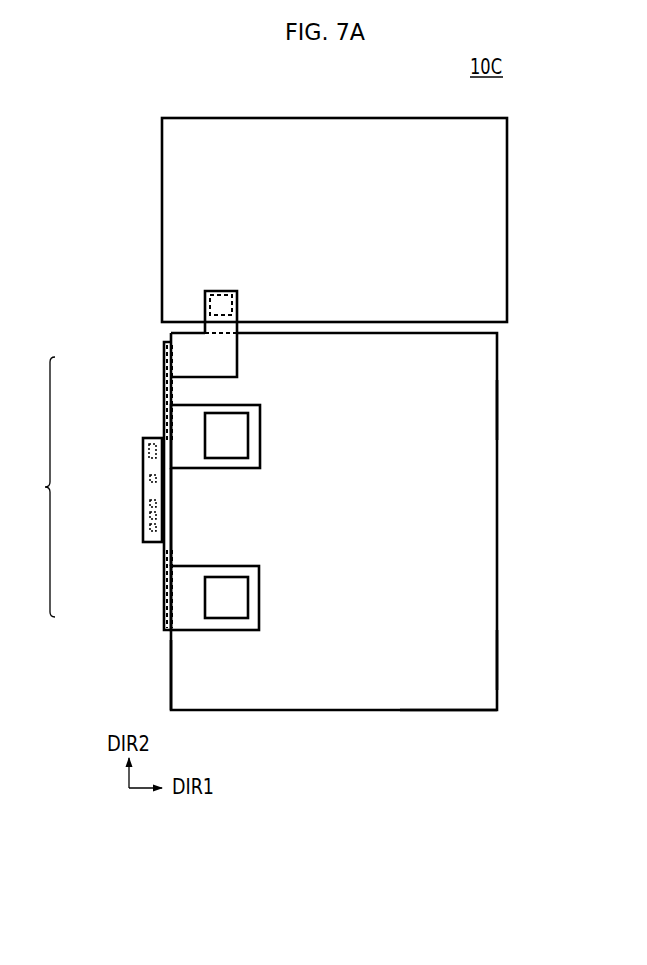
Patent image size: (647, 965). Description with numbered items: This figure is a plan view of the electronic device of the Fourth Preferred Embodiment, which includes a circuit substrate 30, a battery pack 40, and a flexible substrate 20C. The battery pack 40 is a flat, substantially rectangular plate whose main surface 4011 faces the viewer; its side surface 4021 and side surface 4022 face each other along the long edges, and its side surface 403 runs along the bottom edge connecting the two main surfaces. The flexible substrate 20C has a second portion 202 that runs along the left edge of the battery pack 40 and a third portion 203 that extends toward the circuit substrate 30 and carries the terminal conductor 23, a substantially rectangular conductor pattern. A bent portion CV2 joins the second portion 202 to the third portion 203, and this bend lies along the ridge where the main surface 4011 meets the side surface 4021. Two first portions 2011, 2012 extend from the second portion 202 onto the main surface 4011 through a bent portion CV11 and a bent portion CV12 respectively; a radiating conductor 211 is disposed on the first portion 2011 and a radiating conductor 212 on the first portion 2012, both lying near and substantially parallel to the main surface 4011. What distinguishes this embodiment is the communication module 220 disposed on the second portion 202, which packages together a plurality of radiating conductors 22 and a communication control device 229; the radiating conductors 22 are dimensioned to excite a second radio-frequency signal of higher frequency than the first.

The circuit substrate 30 is at (424, 128).
The battery pack 40 is at (490, 467).
The main surface 4011 is at (477, 415).
The side surface 4022 is at (499, 655).
The side surface 4021 is at (169, 698).
The side surface 403 is at (455, 713).
The flexible substrate 20C is at (31, 487).
The third portion 203 is at (187, 362).
The second portion 202 is at (165, 401).
The first portion 2012 is at (188, 418).
The first portion 2011 is at (191, 599).
The radiating conductor 212 is at (223, 452).
The radiating conductor 211 is at (225, 613).
The communication module 220 is at (145, 444).
The communication control device 229 is at (150, 446).
The radiating conductors 22 is at (150, 478).
The terminal conductor 23 is at (210, 296).
The bent portion CV2 is at (168, 339).
The bent portion CV12 is at (164, 481).
The bent portion CV11 is at (167, 634).